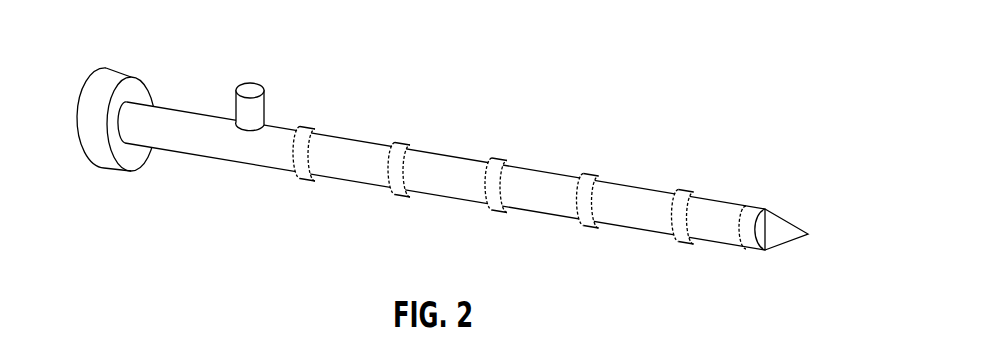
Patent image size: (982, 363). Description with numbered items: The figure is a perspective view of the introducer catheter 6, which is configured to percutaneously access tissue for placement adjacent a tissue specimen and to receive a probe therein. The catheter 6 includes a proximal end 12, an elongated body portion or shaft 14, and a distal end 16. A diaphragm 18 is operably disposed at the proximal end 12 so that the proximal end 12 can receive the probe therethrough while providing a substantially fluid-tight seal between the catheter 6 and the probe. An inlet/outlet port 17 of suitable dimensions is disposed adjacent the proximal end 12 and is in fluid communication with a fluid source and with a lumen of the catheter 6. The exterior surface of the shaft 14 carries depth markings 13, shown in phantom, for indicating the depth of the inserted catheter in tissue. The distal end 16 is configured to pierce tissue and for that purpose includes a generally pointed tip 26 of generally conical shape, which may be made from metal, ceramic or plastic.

The catheter 6 is at (771, 185).
The proximal end 12 is at (173, 110).
The depth markings 13 is at (313, 124).
The shaft 14 is at (455, 157).
The distal end 16 is at (748, 248).
The inlet/outlet port 17 is at (266, 97).
The diaphragm 18 is at (125, 70).
The pointed tip 26 is at (783, 218).